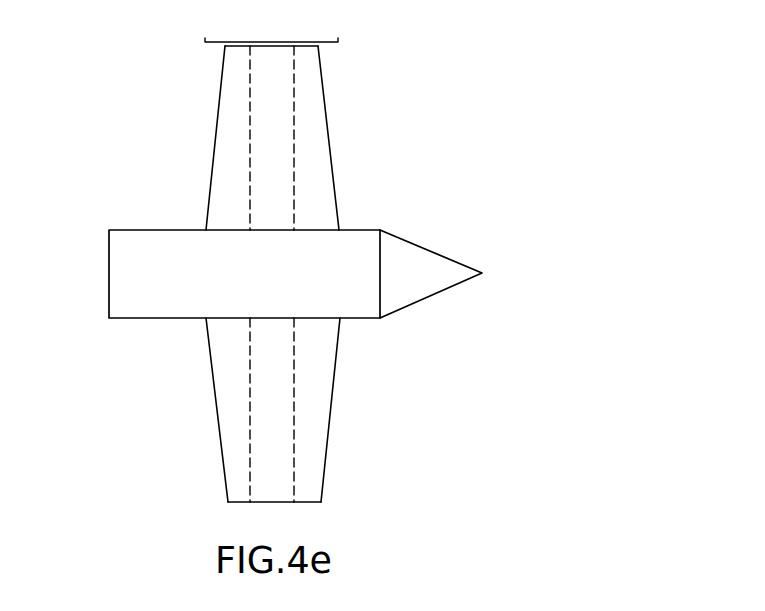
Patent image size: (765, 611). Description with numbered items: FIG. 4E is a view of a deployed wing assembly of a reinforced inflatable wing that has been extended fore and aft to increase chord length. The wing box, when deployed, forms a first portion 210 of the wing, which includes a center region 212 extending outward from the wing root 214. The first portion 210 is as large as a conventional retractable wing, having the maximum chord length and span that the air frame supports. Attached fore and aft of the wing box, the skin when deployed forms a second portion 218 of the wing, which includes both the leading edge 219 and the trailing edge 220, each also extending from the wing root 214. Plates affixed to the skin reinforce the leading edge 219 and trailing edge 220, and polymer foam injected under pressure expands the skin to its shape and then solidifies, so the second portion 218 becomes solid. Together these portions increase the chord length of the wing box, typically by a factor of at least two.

The first portion 210 is at (272, 42).
The center region 212 is at (287, 122).
The wing root 214 is at (273, 230).
The second portion 218 is at (315, 42).
The leading edge 219 is at (333, 157).
The trailing edge 220 is at (213, 142).